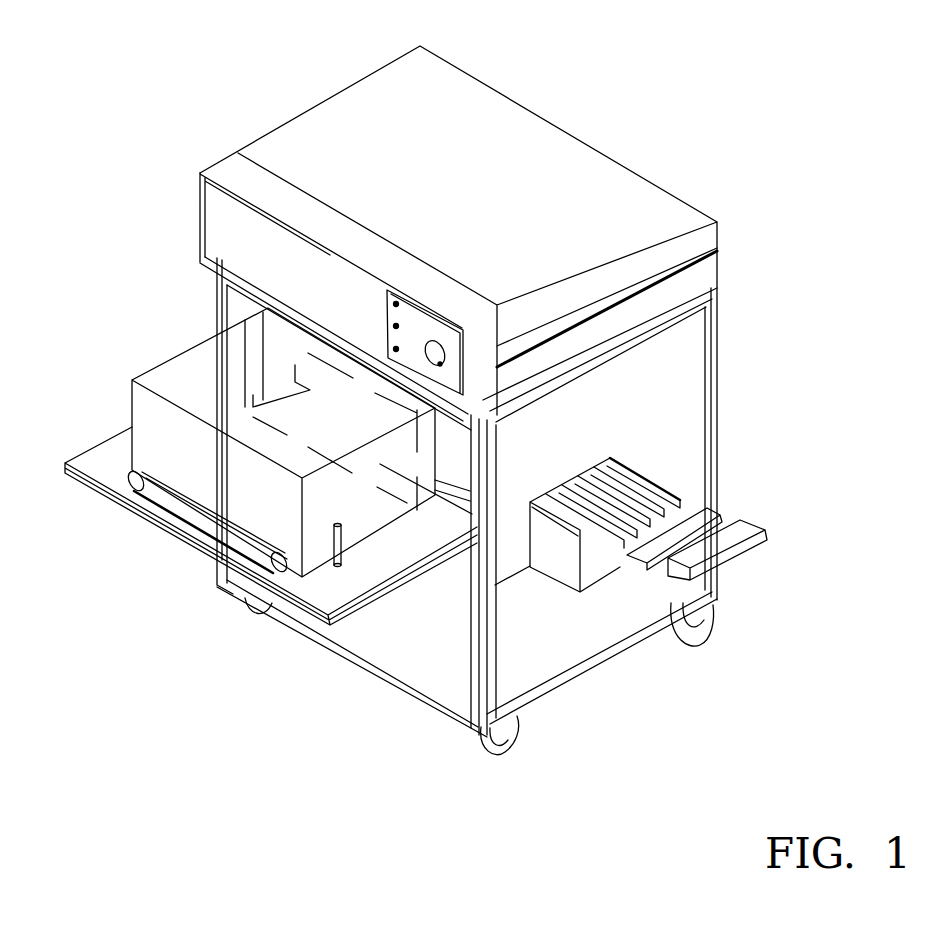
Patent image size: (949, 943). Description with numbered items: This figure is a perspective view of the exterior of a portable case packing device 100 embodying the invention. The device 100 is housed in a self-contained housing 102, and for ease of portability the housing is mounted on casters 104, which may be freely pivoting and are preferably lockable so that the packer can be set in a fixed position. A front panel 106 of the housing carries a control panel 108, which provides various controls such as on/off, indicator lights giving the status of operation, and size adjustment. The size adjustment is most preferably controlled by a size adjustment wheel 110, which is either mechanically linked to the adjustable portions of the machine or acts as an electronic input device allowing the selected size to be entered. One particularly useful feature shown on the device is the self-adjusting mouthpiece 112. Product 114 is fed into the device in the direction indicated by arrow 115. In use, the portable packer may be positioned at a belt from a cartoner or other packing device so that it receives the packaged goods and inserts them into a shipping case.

The device 100 is at (255, 97).
The self-contained housing 102 is at (550, 198).
The casters 104 is at (493, 757).
The front panel 106 is at (303, 263).
The control panel 108 is at (433, 306).
The size adjustment wheel 110 is at (440, 363).
The self-adjusting mouthpiece 112 is at (613, 458).
The product 114 is at (748, 548).
The arrow 115 is at (728, 576).